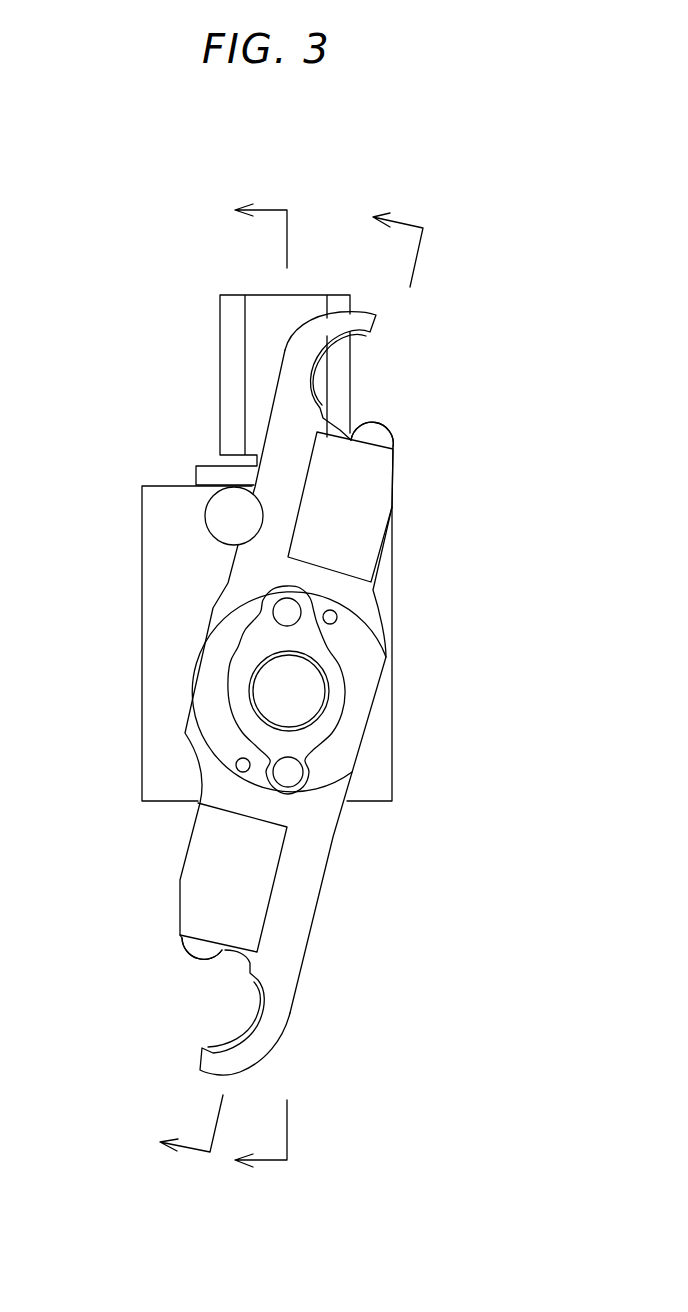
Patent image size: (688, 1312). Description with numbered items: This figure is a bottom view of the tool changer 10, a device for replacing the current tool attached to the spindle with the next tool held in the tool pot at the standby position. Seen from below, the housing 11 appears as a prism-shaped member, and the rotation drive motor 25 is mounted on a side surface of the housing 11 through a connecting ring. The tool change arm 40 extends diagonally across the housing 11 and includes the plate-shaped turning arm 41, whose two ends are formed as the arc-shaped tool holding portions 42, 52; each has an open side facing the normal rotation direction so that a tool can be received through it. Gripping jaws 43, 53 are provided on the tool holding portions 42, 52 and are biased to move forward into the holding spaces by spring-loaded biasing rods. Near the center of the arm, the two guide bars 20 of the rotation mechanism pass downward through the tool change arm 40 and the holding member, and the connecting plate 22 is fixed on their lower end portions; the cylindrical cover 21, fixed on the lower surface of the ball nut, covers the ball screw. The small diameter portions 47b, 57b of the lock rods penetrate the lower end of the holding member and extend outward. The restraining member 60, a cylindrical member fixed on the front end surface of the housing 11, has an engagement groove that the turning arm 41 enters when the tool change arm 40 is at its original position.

The tool changer 10 is at (104, 344).
The housing 11 is at (145, 553).
The guide bars 20 is at (299, 608).
The cylindrical cover 21 is at (313, 705).
The connecting plate 22 is at (342, 677).
The rotation drive motor 25 is at (233, 297).
The tool change arm 40 is at (385, 872).
The turning arm 41 is at (205, 780).
The tool holding portion 42 is at (407, 373).
The gripping jaw 43 is at (377, 428).
The small diameter portion 47b is at (338, 618).
The tool holding portion 52 is at (167, 1012).
The gripping jaw 53 is at (190, 950).
The small diameter portion 57b is at (235, 765).
The restraining member 60 is at (210, 505).